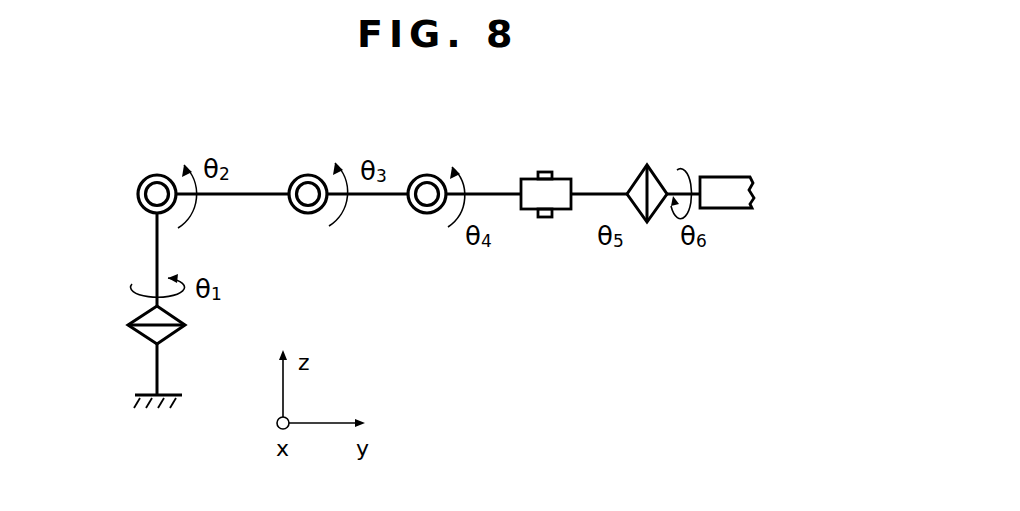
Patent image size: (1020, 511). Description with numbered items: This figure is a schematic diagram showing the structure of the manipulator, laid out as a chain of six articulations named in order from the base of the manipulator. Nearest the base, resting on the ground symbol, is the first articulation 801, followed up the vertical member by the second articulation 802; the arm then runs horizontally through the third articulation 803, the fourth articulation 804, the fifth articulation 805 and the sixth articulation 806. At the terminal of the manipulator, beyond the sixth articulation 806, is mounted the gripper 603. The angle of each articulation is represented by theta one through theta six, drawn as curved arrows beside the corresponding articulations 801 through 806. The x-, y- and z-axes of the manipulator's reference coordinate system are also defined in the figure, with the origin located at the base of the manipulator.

The first articulation 801 is at (171, 335).
The second articulation 802 is at (162, 140).
The third articulation 803 is at (308, 175).
The fourth articulation 804 is at (430, 175).
The fifth articulation 805 is at (532, 179).
The sixth articulation 806 is at (649, 166).
The gripper 603 is at (726, 177).